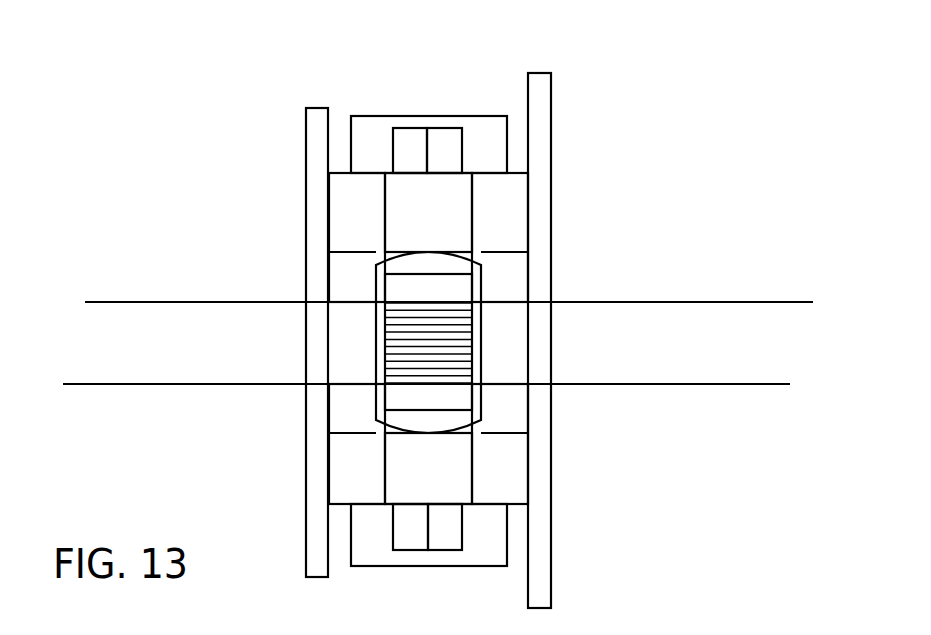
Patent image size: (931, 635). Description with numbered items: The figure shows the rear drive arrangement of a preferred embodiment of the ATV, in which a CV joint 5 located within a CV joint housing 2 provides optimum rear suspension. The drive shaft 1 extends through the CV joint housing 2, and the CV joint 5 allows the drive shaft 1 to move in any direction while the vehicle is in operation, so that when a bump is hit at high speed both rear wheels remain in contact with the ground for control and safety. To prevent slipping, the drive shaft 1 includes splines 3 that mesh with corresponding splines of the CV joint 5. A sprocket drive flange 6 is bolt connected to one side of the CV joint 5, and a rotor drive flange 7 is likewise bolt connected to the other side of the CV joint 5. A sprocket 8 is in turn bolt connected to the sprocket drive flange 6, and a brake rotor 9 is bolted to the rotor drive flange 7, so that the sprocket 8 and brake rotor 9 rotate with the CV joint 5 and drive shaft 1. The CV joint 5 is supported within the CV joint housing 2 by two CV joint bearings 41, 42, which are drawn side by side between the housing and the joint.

The drive shaft 1 is at (713, 302).
The CV joint housing 2 is at (472, 115).
The splines 3 is at (445, 304).
The CV joint 5 is at (455, 221).
The sprocket drive flange 6 is at (345, 227).
The rotor drive flange 7 is at (513, 467).
The sprocket 8 is at (306, 139).
The brake rotor 9 is at (552, 523).
The CV joint bearing 41 is at (407, 134).
The CV joint bearing 42 is at (441, 137).